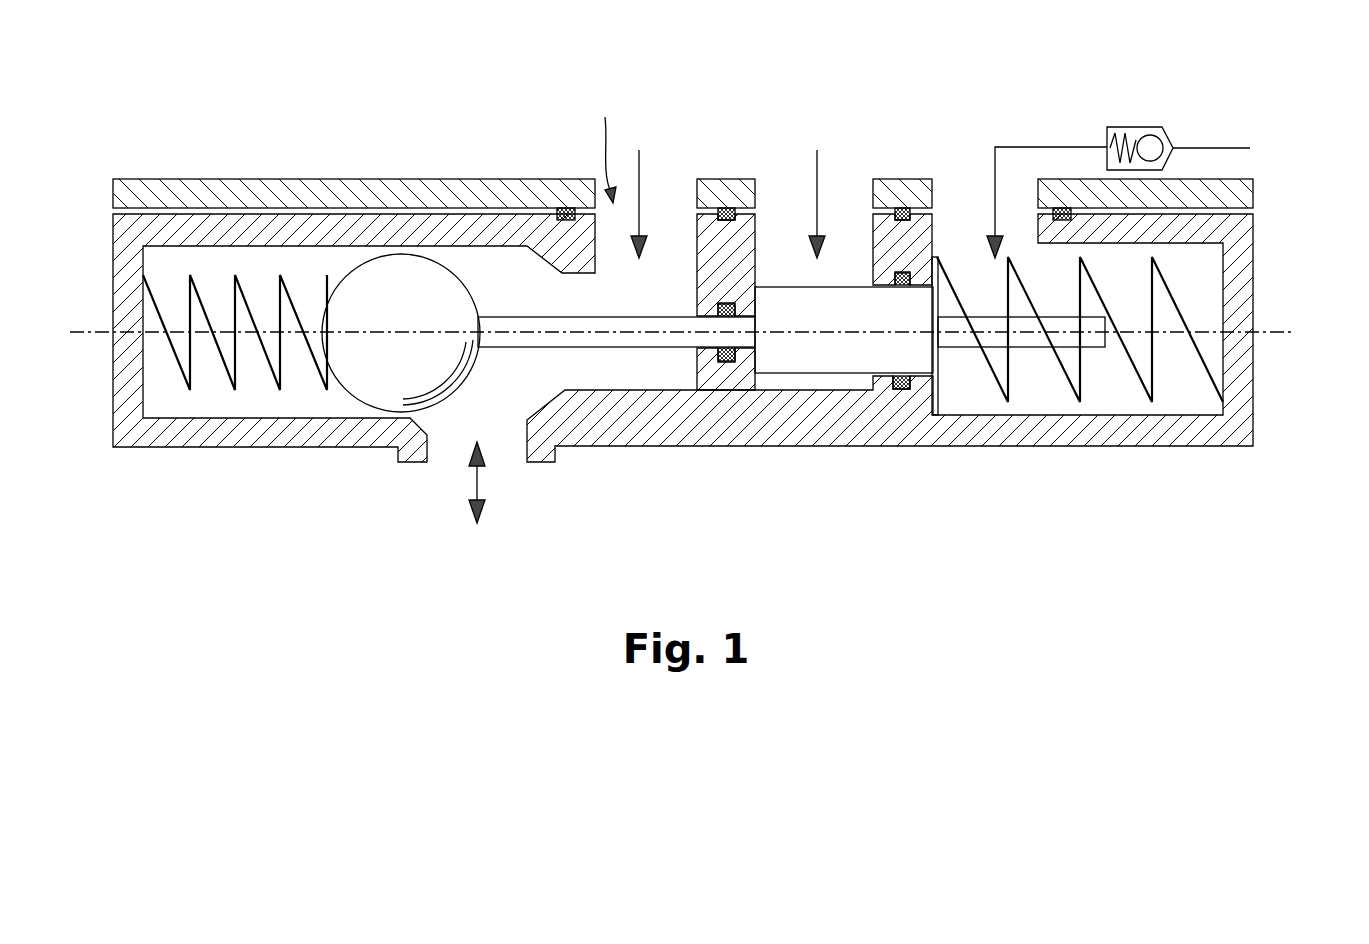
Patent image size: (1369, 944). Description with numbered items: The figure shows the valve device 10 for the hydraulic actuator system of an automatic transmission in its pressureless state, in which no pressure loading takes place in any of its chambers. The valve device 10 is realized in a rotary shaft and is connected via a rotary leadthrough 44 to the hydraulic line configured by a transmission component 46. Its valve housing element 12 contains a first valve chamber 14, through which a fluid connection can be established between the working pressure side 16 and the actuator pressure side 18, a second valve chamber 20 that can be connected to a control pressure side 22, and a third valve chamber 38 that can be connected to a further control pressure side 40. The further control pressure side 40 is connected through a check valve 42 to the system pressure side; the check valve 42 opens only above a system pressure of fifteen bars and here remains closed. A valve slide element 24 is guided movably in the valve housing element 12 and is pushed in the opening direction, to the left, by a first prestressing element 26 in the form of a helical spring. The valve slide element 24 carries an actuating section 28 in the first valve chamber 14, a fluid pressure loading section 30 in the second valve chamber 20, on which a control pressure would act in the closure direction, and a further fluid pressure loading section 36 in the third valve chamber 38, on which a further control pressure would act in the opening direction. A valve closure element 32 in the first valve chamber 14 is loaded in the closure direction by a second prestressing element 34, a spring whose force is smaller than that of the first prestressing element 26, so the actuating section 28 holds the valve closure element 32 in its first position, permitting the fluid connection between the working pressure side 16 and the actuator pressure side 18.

The valve device 10 is at (220, 636).
The valve housing element 12 is at (733, 408).
The first valve chamber 14 is at (507, 272).
The working pressure side 16 is at (640, 205).
The actuator pressure side 18 is at (477, 477).
The second valve chamber 20 is at (851, 238).
The control pressure side 22 is at (817, 205).
The valve slide element 24 is at (668, 358).
The first prestressing element 26 is at (1155, 362).
The actuating section 28 is at (517, 350).
The fluid pressure loading section 30 is at (830, 350).
The valve closure element 32 is at (372, 370).
The second prestressing element 34 is at (222, 365).
The further fluid pressure loading section 36 is at (937, 362).
The third valve chamber 38 is at (1203, 287).
The further control pressure side 40 is at (1048, 147).
The check valve 42 is at (1142, 125).
The rotary leadthrough 44 is at (606, 145).
The transmission component 46 is at (330, 197).